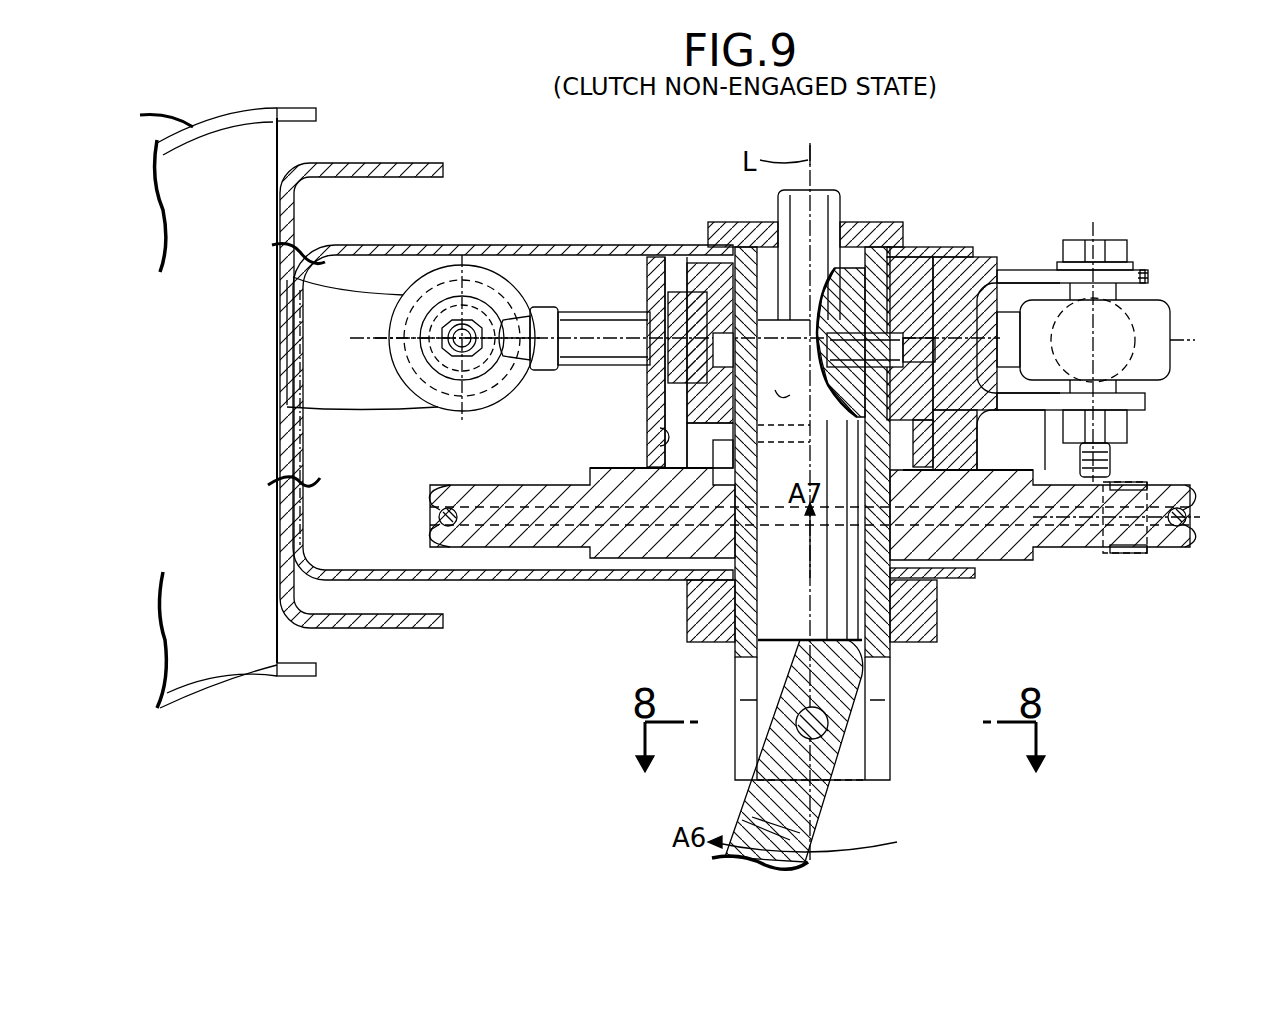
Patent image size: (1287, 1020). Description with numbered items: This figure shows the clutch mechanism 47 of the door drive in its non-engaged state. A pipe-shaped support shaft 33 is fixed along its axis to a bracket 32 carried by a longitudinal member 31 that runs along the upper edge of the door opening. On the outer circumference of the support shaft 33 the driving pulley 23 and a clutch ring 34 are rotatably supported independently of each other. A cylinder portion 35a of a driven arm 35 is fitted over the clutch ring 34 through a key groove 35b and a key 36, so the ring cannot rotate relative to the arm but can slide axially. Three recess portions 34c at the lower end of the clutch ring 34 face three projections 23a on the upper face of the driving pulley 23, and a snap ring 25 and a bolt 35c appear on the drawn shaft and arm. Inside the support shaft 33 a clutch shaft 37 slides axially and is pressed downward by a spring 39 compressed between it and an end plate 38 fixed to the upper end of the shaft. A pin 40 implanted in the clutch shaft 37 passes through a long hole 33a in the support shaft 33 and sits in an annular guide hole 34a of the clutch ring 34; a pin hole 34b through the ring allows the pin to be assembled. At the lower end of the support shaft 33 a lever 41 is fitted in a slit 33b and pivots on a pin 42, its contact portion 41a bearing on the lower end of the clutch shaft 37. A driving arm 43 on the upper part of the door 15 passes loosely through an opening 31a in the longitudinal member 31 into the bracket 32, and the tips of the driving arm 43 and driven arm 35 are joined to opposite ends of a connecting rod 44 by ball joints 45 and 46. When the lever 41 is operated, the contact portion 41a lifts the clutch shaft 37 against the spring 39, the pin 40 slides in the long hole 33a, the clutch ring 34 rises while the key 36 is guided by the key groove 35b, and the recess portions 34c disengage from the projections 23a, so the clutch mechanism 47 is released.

The door 15 is at (192, 122).
The driving pulley 23 is at (497, 557).
The projections 23a is at (715, 443).
The snap ring 25 is at (439, 517).
The longitudinal member 31 is at (392, 158).
The opening 31a is at (283, 450).
The bracket 32 is at (548, 245).
The support shaft 33 is at (725, 597).
The long hole 33a is at (823, 385).
The slit 33b is at (888, 673).
The clutch ring 34 is at (700, 256).
The guide hole 34a is at (662, 352).
The pin hole 34b is at (1012, 354).
The recess portions 34c is at (988, 432).
The driven arm 35 is at (985, 260).
The cylinder portion 35a is at (648, 275).
The key groove 35b is at (660, 437).
The bolt 35c is at (1148, 275).
The key 36 is at (680, 372).
The clutch shaft 37 is at (755, 673).
The end plate 38 is at (870, 225).
The spring 39 is at (788, 240).
The pin 40 is at (817, 330).
The lever 41 is at (836, 796).
The contact portion 41a is at (870, 655).
The pin 42 is at (830, 723).
The driving arm 43 is at (368, 400).
The connecting rod 44 is at (585, 318).
The ball joint 45 is at (437, 283).
The ball joint 46 is at (1140, 378).
The clutch mechanism 47 is at (900, 252).